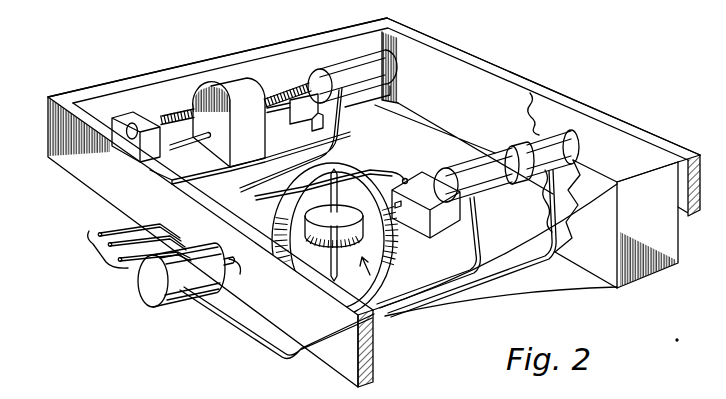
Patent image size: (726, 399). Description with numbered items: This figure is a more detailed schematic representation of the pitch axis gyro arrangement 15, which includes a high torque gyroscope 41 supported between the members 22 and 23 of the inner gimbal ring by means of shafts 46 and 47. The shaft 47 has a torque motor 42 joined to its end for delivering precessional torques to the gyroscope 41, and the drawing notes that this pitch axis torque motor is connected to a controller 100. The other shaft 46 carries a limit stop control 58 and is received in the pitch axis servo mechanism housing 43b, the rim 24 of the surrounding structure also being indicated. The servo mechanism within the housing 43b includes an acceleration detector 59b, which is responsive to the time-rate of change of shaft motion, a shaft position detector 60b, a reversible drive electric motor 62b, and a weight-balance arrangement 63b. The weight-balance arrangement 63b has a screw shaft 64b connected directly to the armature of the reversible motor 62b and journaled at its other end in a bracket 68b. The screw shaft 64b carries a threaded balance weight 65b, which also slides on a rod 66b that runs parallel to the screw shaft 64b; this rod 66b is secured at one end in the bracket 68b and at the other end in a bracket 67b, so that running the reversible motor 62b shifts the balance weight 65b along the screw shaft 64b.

The pitch axis gyro arrangement 15 is at (519, 71).
The member of the inner gimbal ring 22 is at (128, 210).
The member of the inner gimbal ring 23 is at (441, 44).
The housing rim 24 is at (148, 80).
The high torque gyroscope 41 is at (375, 281).
The torque motor 42 is at (157, 292).
The pitch axis servo mechanism housing 43b is at (584, 255).
The shaft 46 is at (398, 208).
The shaft 47 is at (280, 246).
The limit stop control 58 is at (447, 222).
The acceleration detector 59b is at (480, 183).
The shaft position detector 60b is at (577, 134).
The reversible drive electric motor 62b is at (382, 76).
The weight-balance arrangement 63b is at (270, 72).
The screw shaft 64b is at (183, 115).
The threaded balance weight 65b is at (240, 62).
The rod 66b is at (168, 150).
The bracket 67b is at (313, 133).
The bracket 68b is at (115, 118).
The controller 100 is at (80, 266).